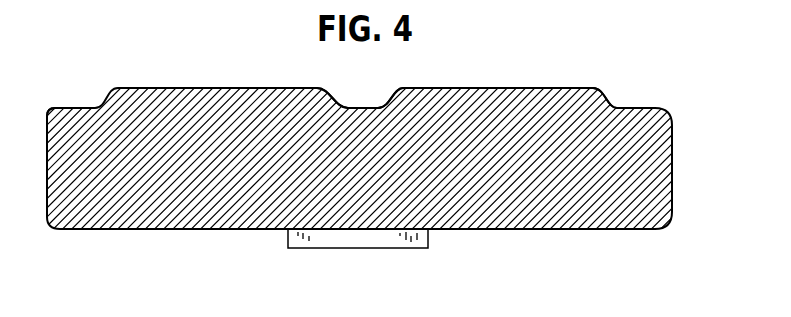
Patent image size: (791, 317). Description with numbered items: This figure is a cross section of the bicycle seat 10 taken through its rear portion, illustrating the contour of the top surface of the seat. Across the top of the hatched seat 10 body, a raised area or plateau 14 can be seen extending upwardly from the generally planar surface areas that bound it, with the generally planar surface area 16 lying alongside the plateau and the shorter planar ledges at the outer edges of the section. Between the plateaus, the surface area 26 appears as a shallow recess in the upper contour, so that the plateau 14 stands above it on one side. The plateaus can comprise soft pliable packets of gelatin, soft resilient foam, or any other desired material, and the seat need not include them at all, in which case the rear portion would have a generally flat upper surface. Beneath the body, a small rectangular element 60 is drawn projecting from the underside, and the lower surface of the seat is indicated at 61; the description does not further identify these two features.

The seat 10 is at (680, 125).
The plateau 14 is at (207, 88).
The generally planar surface area 16 is at (467, 88).
The surface area 26 is at (348, 107).
The adhesive strip / mounting tab 60 is at (429, 238).
The bottom surface 61 is at (628, 230).